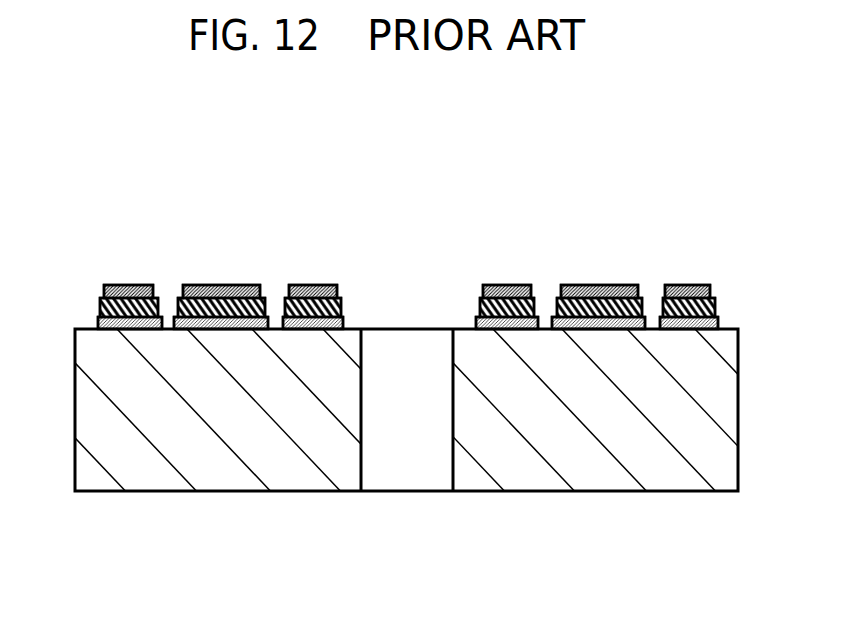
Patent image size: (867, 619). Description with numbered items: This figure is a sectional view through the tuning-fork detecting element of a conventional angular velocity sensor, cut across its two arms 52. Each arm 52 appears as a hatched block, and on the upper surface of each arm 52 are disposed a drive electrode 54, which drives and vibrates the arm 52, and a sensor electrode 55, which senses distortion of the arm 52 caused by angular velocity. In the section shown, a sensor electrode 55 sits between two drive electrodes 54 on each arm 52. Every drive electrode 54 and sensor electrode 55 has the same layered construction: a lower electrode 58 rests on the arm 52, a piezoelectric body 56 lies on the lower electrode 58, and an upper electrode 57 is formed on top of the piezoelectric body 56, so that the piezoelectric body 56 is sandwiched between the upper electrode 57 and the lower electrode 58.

The arm 52 is at (427, 458).
The drive electrode 54 is at (98, 268).
The sensor electrode 55 is at (262, 268).
The piezoelectric body 56 is at (102, 306).
The upper electrode 57 is at (107, 288).
The lower electrode 58 is at (150, 336).